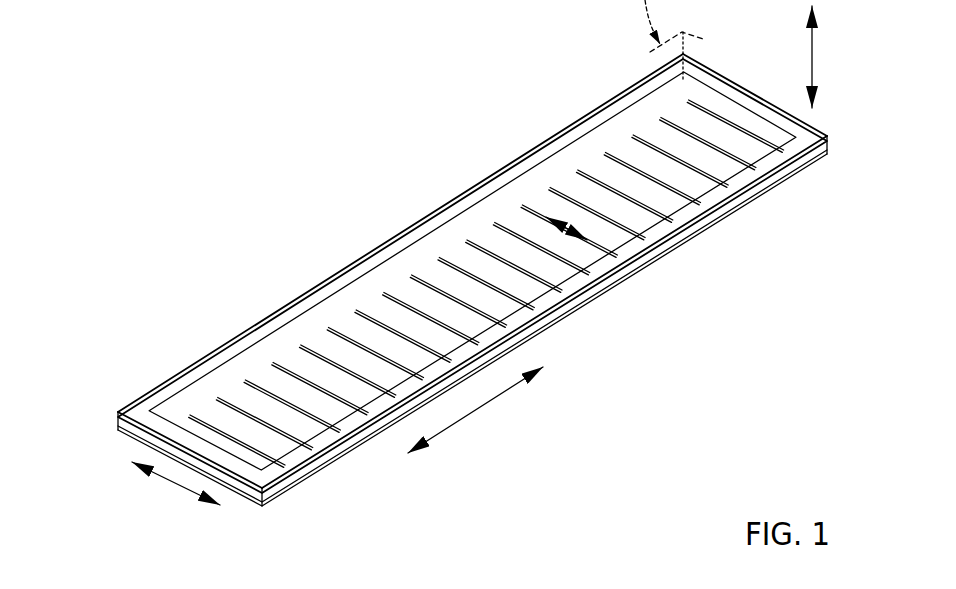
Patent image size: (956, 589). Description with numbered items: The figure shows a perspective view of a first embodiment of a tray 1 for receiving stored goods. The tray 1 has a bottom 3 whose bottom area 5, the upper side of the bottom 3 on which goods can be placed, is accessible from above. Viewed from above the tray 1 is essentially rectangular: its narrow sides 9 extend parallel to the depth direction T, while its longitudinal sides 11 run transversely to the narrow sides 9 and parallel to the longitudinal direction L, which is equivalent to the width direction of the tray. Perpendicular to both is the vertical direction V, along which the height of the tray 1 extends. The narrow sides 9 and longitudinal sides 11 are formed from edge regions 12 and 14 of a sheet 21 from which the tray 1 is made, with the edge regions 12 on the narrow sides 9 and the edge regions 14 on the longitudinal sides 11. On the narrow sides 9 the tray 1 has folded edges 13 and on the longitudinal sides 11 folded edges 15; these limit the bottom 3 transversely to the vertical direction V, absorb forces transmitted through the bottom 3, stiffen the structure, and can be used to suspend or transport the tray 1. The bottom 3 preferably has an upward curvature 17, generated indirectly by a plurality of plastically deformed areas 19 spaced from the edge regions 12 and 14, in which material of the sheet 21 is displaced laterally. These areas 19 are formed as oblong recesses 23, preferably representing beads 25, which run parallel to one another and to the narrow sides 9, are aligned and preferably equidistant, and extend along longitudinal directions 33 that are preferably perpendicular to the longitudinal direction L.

The tray 1 is at (368, 150).
The bottom 3 is at (232, 362).
The bottom area 5 is at (262, 360).
The narrow sides 9 is at (140, 437).
The longitudinal sides 11 is at (446, 206).
The edge regions 12 is at (253, 512).
The folded edges 13 is at (121, 428).
The edge regions 14 is at (503, 140).
The folded edges 15 is at (351, 265).
The curvature 17 is at (437, 275).
The plastically deformed areas 19 is at (435, 239).
The sheet 21 is at (358, 331).
The oblong recesses 23 is at (435, 239).
The beads 25 is at (292, 363).
The longitudinal directions 33 is at (543, 215).
The vertical direction V is at (814, 57).
The depth direction T is at (177, 485).
The longitudinal direction L is at (483, 405).